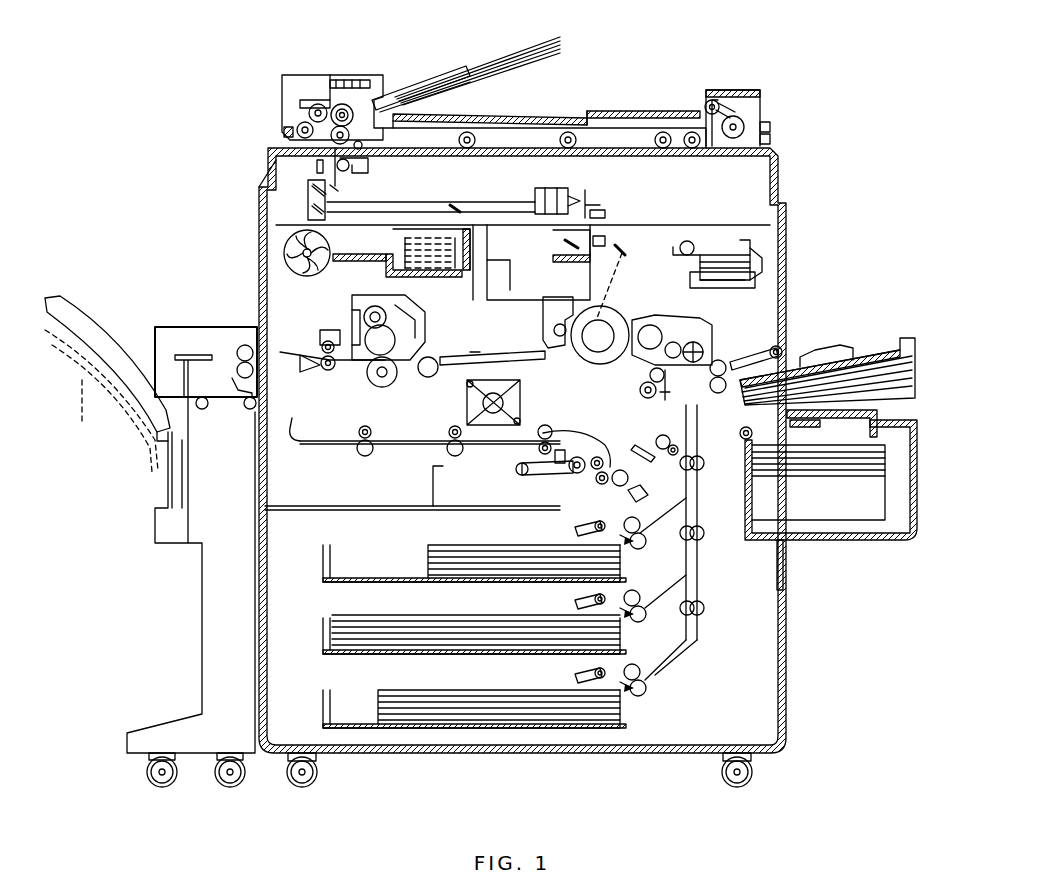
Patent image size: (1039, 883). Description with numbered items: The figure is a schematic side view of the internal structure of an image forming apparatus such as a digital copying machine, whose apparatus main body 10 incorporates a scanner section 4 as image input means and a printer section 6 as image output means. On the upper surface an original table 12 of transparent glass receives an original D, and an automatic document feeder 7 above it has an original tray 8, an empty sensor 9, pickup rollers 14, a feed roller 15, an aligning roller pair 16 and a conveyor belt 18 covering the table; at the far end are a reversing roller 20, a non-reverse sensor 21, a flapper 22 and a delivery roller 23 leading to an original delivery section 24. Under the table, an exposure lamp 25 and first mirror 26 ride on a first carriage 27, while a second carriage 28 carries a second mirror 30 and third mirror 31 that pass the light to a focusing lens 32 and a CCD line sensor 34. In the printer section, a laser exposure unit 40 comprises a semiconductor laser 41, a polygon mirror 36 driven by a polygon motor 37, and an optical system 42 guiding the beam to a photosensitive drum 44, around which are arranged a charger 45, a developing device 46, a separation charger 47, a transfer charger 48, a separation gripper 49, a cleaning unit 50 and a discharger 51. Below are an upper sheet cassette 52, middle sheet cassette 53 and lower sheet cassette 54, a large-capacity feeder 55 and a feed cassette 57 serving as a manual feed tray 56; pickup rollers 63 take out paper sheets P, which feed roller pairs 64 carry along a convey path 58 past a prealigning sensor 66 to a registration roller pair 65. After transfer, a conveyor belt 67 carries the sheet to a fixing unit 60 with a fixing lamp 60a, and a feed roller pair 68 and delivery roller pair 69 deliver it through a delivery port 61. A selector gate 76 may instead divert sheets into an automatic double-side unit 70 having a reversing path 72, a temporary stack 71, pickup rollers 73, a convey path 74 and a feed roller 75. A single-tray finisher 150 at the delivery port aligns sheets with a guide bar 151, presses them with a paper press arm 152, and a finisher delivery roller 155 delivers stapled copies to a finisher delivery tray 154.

The scanner section 4 is at (513, 191).
The printer section 6 is at (709, 313).
The automatic document feeder 7 is at (418, 79).
The original tray 8 is at (448, 97).
The empty sensor 9 is at (373, 98).
The apparatus main body 10 is at (788, 635).
The original table 12 is at (636, 138).
The pickup rollers 14 is at (340, 90).
The feed roller 15 is at (296, 112).
The aligning roller pair 16 is at (292, 134).
The conveyor belt 18 is at (533, 116).
The reversing roller 20 is at (771, 127).
The non-reverse sensor 21 is at (771, 140).
The flapper 22 is at (731, 94).
The delivery roller 23 is at (703, 104).
The original delivery section 24 is at (562, 114).
The exposure lamp 25 is at (368, 168).
The first mirror 26 is at (342, 189).
The first carriage 27 is at (290, 160).
The second carriage 28 is at (305, 190).
The second mirror 30 is at (312, 200).
The third mirror 31 is at (332, 233).
The focusing lens 32 is at (557, 198).
The CCD line sensor 34 is at (595, 212).
The polygon mirror 36 is at (735, 250).
The polygon motor 37 is at (756, 274).
The laser exposure unit 40 is at (768, 252).
The semiconductor laser 41 is at (687, 241).
The optical system 42 is at (560, 248).
The photosensitive drum 44 is at (620, 324).
The charger 45 is at (597, 326).
The developing device 46 is at (716, 336).
The separation charger 47 is at (573, 385).
The transfer charger 48 is at (595, 395).
The separation gripper 49 is at (448, 357).
The cleaning unit 50 is at (530, 306).
The discharger 51 is at (576, 306).
The upper sheet cassette 52 is at (320, 567).
The middle sheet cassette 53 is at (320, 639).
The lower sheet cassette 54 is at (320, 716).
The large-capacity feeder 55 is at (846, 522).
The manual feed tray 56 is at (852, 340).
The feed cassette 57 is at (903, 334).
The convey path 58 is at (455, 357).
The fixing unit 60 is at (400, 318).
The fixing lamp 60a is at (366, 302).
The delivery port 61 is at (252, 342).
The pickup rollers 63 is at (575, 530).
The feed roller pairs 64 is at (722, 367).
The registration roller pair 65 is at (650, 383).
The prealigning sensor 66 is at (648, 398).
The conveyor belt 67 is at (431, 379).
The feed roller pair 68 is at (328, 372).
The delivery roller pair 69 is at (287, 316).
The automatic double-side unit 70 is at (315, 449).
The temporary stack 71 is at (474, 484).
The reversing path 72 is at (345, 448).
The pickup rollers 73 is at (535, 471).
The convey path 74 is at (640, 446).
The feed roller 75 is at (592, 476).
The selector gate 76 is at (303, 345).
The single-tray finisher 150 is at (142, 352).
The guide bar 151 is at (190, 358).
The paper press arm 152 is at (249, 408).
The finisher delivery tray 154 is at (60, 320).
The finisher delivery roller 155 is at (203, 410).
The paper sheet P is at (443, 565).
The original D is at (530, 62).